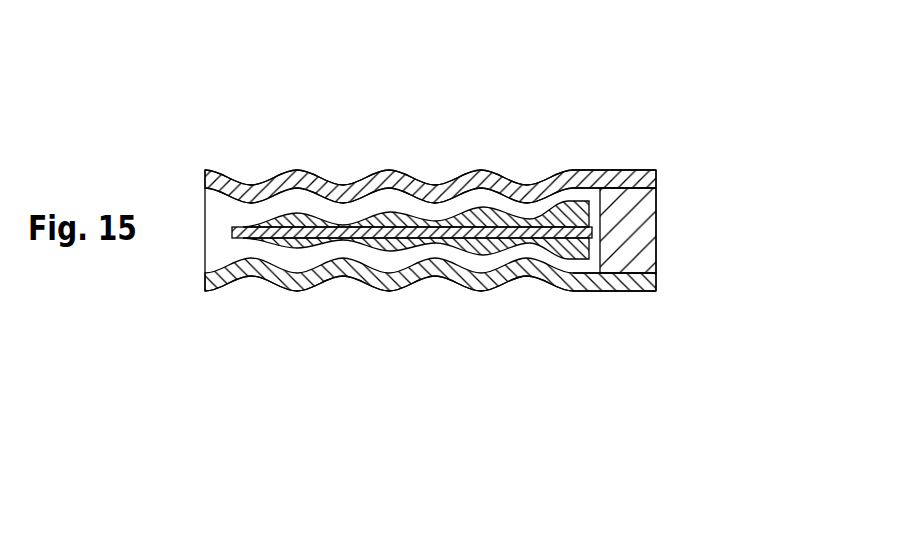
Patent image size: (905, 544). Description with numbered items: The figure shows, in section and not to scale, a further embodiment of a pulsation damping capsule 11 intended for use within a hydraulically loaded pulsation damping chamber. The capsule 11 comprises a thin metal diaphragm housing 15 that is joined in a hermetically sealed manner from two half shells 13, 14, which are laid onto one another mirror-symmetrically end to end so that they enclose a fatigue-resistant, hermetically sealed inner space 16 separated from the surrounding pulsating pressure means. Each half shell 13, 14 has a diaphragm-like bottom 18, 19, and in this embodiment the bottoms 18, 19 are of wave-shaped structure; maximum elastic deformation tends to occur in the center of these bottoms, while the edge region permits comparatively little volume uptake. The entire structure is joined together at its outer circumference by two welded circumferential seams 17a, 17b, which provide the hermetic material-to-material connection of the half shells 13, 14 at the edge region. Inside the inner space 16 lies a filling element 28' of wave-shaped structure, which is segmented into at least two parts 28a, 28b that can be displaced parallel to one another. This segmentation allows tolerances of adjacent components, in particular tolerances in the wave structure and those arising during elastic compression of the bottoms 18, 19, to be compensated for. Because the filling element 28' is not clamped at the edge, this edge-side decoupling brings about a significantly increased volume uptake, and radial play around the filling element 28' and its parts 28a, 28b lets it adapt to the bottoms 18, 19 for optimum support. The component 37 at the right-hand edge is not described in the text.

The pulsation damping capsule 11 is at (625, 125).
The half shell 13 is at (295, 168).
The half shell 14 is at (293, 293).
The metal diaphragm housing 15 is at (228, 115).
The inner space 16 is at (343, 206).
The circumferential seam 17a is at (648, 188).
The circumferential seam 17b is at (648, 272).
The diaphragm-like bottom 18 is at (483, 172).
The diaphragm-like bottom 19 is at (485, 280).
The filling element 28' is at (412, 295).
The part of filling element 28a is at (396, 240).
The part of filling element 28b is at (394, 213).
The end block 37 is at (637, 230).